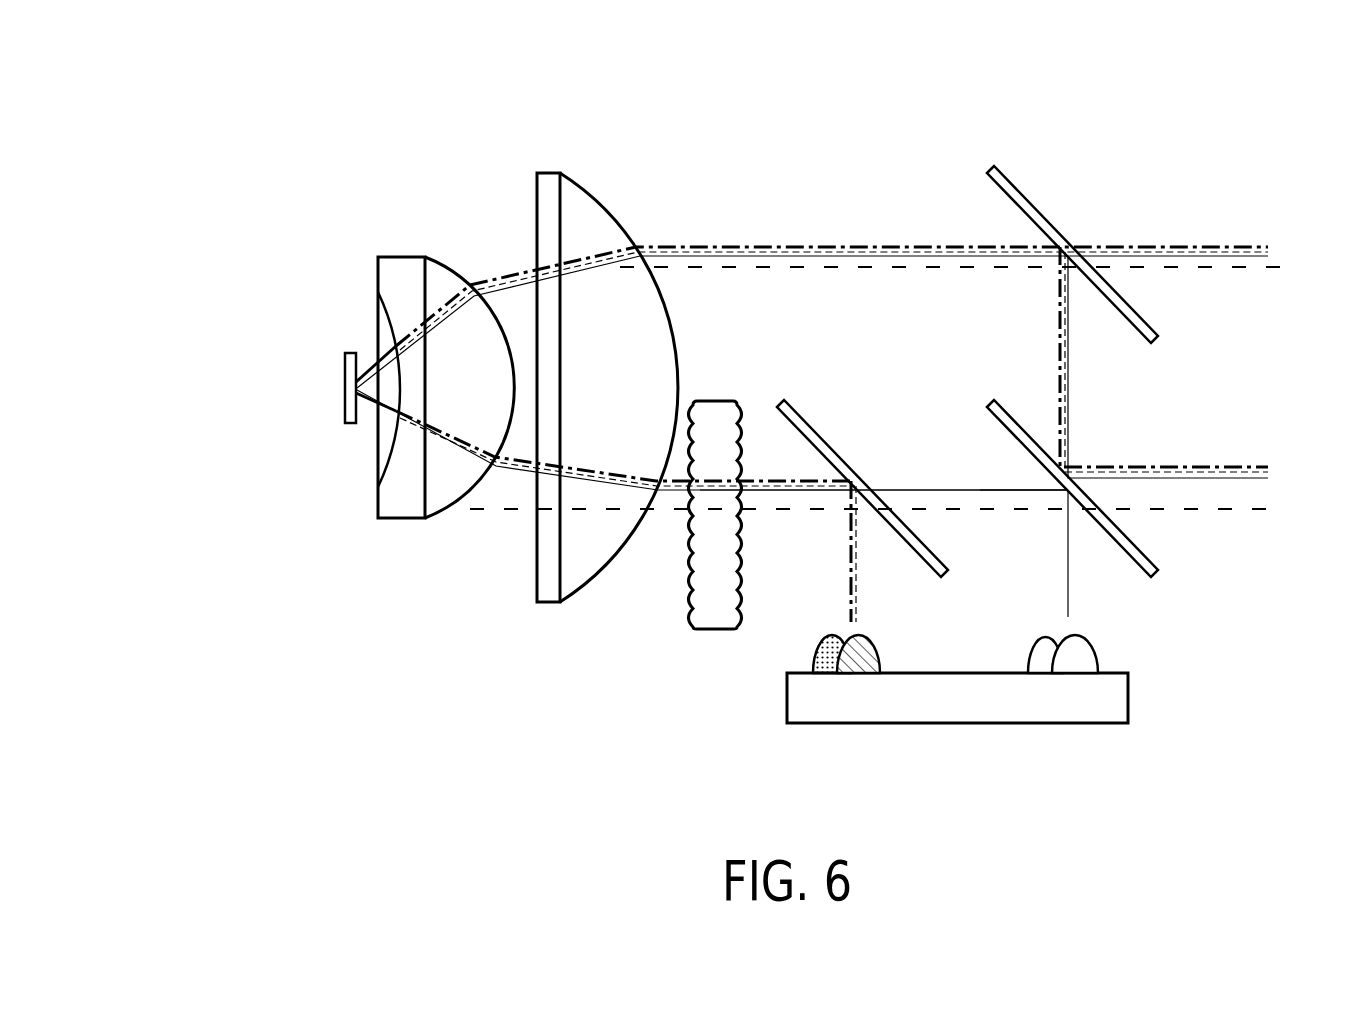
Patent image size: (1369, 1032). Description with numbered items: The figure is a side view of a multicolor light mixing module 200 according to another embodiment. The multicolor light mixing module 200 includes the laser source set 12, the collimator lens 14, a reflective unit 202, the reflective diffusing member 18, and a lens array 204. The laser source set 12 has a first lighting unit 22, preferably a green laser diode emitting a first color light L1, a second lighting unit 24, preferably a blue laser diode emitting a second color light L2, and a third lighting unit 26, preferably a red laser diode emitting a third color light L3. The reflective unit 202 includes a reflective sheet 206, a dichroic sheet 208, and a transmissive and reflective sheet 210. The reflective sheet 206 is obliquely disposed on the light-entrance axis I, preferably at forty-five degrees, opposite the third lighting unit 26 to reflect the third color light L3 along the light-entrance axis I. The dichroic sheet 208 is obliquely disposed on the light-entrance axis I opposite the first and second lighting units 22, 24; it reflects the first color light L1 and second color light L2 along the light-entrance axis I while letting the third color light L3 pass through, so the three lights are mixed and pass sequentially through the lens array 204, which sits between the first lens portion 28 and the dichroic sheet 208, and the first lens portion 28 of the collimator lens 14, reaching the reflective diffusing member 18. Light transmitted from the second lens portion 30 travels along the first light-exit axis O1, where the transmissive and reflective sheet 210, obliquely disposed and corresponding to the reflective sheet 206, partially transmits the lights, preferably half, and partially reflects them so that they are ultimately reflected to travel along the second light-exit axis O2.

The multicolor light mixing module 200 is at (283, 105).
The laser source set 12 is at (1157, 675).
The collimator lens 14 is at (546, 154).
The reflective diffusing member 18 is at (343, 371).
The first lighting unit 22 is at (858, 668).
The second lighting unit 24 is at (822, 675).
The third lighting unit 26 is at (1072, 665).
The first lens portion 28 is at (596, 548).
The second lens portion 30 is at (582, 222).
The reflective unit 202 is at (727, 431).
The lens array 204 is at (705, 617).
The reflective sheet 206 is at (1148, 560).
The dichroic sheet 208 is at (940, 556).
The transmissive and reflective sheet 210 is at (1013, 186).
The first color light L1 is at (853, 570).
The second color light L2 is at (850, 532).
The third color light L3 is at (1072, 568).
The first light-exit axis O1 is at (975, 268).
The second light-exit axis O2 is at (901, 510).
The light-entrance axis I is at (1014, 510).